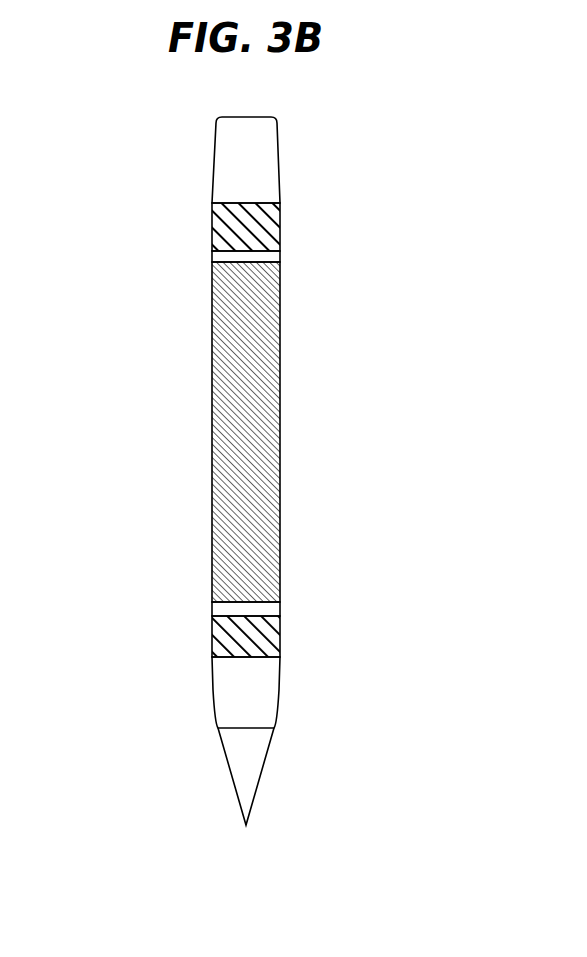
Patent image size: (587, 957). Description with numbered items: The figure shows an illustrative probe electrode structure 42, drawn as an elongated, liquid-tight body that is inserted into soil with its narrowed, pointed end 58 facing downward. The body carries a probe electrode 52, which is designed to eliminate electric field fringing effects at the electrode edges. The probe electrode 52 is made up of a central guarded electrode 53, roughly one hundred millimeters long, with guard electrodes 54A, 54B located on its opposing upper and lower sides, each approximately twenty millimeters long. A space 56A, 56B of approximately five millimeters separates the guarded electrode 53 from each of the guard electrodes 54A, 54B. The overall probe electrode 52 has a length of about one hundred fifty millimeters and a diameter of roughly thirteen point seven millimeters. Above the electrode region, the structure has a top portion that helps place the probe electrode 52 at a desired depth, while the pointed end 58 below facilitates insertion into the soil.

The probe electrode structure 42 is at (176, 149).
The probe electrode 52 is at (105, 207).
The guarded electrode 53 is at (227, 402).
The guard electrode 54A is at (212, 226).
The guard electrode 54B is at (213, 633).
The space 56A is at (277, 252).
The space 56B is at (277, 610).
The pointed end 58 is at (222, 837).